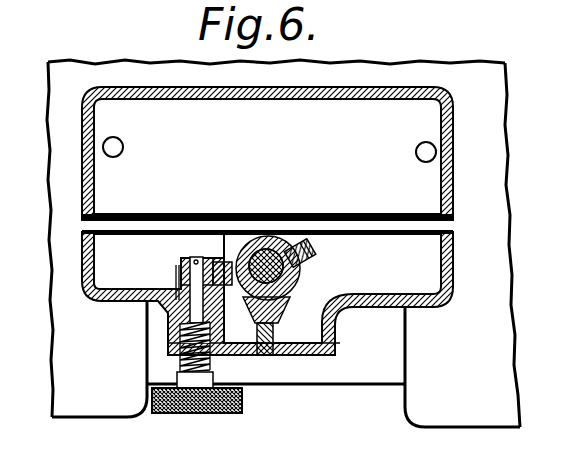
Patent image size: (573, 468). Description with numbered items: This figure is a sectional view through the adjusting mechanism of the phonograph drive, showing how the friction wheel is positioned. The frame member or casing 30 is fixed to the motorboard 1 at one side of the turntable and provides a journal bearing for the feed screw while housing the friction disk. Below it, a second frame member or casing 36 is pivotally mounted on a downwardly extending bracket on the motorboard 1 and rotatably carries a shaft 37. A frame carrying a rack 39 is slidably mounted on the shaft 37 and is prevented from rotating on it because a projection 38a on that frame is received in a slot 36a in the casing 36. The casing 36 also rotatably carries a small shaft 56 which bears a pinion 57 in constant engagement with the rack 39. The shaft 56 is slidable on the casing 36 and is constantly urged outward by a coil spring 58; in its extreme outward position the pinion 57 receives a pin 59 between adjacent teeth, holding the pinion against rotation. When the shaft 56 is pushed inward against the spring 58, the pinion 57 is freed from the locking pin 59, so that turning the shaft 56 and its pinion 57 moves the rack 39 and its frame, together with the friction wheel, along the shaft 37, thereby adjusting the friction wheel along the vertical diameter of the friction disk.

The motorboard 1 is at (464, 416).
The frame member or casing 30 is at (360, 110).
The second frame member or casing 36 is at (433, 286).
The slot 36a is at (262, 343).
The shaft 37 is at (290, 287).
The projection 38a is at (268, 350).
The rack 39 is at (226, 258).
The small shaft 56 is at (193, 257).
The pinion 57 is at (182, 258).
The coil spring 58 is at (183, 362).
The pin 59 is at (175, 280).